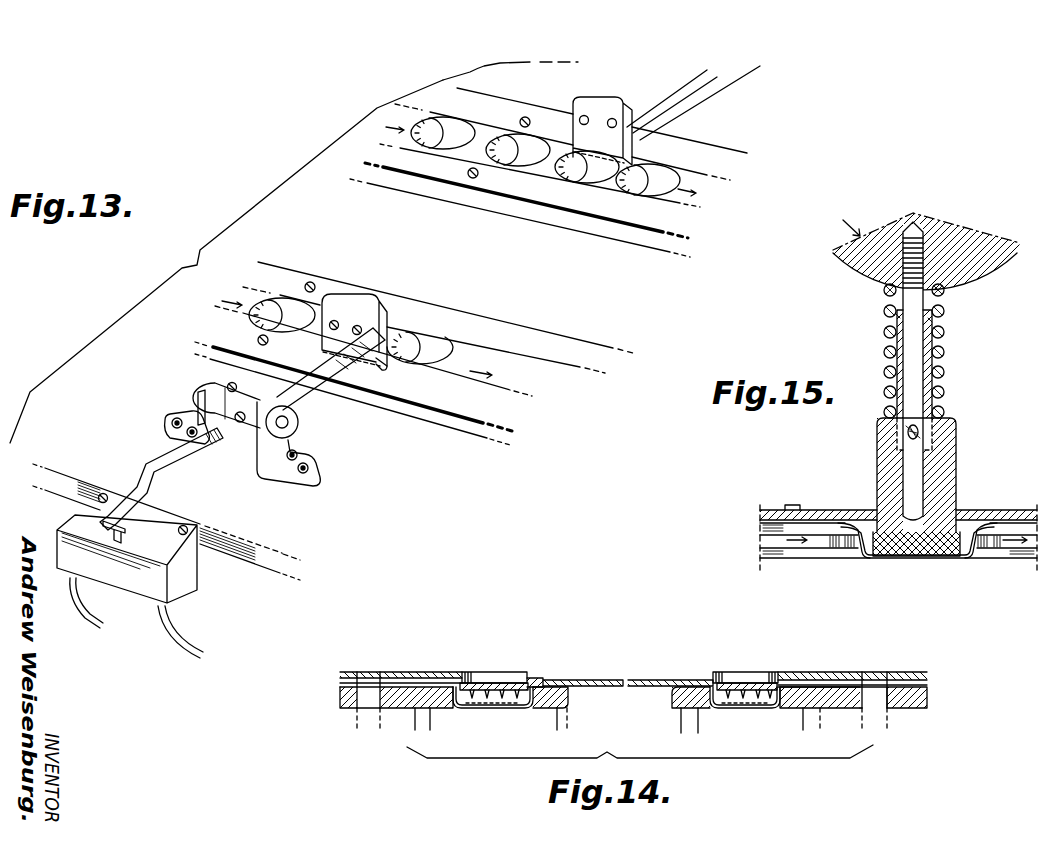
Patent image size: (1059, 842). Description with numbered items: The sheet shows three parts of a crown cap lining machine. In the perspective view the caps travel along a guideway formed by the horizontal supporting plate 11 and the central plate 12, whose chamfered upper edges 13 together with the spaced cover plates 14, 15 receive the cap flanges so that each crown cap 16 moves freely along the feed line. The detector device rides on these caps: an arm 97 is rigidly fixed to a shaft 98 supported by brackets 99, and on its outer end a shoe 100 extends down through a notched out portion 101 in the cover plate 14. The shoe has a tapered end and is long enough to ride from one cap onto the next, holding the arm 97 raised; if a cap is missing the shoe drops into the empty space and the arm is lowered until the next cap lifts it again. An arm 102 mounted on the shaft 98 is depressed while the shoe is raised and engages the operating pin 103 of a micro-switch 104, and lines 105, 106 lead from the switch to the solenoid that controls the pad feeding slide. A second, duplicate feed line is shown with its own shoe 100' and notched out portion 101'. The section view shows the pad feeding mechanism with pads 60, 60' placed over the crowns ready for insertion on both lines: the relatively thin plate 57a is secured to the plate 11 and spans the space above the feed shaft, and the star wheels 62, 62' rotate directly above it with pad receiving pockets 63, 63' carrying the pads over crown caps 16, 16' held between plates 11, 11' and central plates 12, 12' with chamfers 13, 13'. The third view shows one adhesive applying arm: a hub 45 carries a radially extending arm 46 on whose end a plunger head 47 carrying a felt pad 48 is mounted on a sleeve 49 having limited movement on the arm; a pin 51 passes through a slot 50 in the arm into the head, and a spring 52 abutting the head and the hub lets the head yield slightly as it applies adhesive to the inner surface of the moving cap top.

In FIG. 13, the horizontal supporting plate 11 is at (226, 330).
In FIG. 14, the horizontal supporting plate 11 is at (401, 687).
In FIG. 13, the horizontal supporting plate 11' is at (510, 78).
In FIG. 14, the horizontal supporting plate 11' is at (857, 706).
In FIG. 15, the central plate 12 is at (898, 564).
In FIG. 14, the central plate 12 is at (559, 668).
In FIG. 14, the central plate 12' is at (687, 689).
In FIG. 15, the chamfered portion 13 is at (898, 558).
In FIG. 14, the chamfered portion 13 is at (499, 718).
In FIG. 14, the chamfered portion 13' is at (813, 714).
In FIG. 13, the cover plate 14 is at (687, 140).
In FIG. 13, the cover plate 15 is at (644, 216).
In FIG. 15, the cover plate 15 is at (812, 513).
In FIG. 13, the crown cap 16 is at (472, 250).
In FIG. 15, the crown cap 16 is at (922, 535).
In FIG. 14, the crown cap 16 is at (493, 714).
In FIG. 14, the crown cap 16' is at (745, 714).
In FIG. 15, the hub 45 is at (992, 254).
In FIG. 15, the arm 46 is at (916, 330).
In FIG. 15, the plunger head 47 is at (944, 462).
In FIG. 15, the felt pad 48 is at (931, 361).
In FIG. 15, the sleeve 49 is at (934, 338).
In FIG. 15, the slot 50 is at (920, 430).
In FIG. 15, the pin 51 is at (909, 434).
In FIG. 15, the spring 52 is at (944, 387).
In FIG. 14, the thin plate 57a is at (640, 680).
In FIG. 14, the pad 60 is at (507, 673).
In FIG. 14, the pad 60' is at (744, 666).
In FIG. 14, the star wheel 62 is at (380, 684).
In FIG. 14, the star wheel 62' is at (874, 687).
In FIG. 14, the pad receiving pocket 63 is at (494, 661).
In FIG. 14, the pad receiving pocket 63' is at (748, 661).
In FIG. 13, the arm 97 is at (317, 378).
In FIG. 13, the shaft 98 is at (298, 422).
In FIG. 13, the bracket 99 is at (310, 458).
In FIG. 13, the shoe 100 is at (365, 316).
In FIG. 13, the shoe 100' is at (616, 117).
In FIG. 13, the notched out portion 101 is at (402, 375).
In FIG. 13, the notched out portion 101' is at (693, 108).
In FIG. 13, the arm 102 is at (167, 466).
In FIG. 13, the operating pin 103 is at (123, 531).
In FIG. 13, the micro-switch 104 is at (125, 593).
In FIG. 13, the line 105 is at (90, 614).
In FIG. 13, the line 106 is at (185, 643).